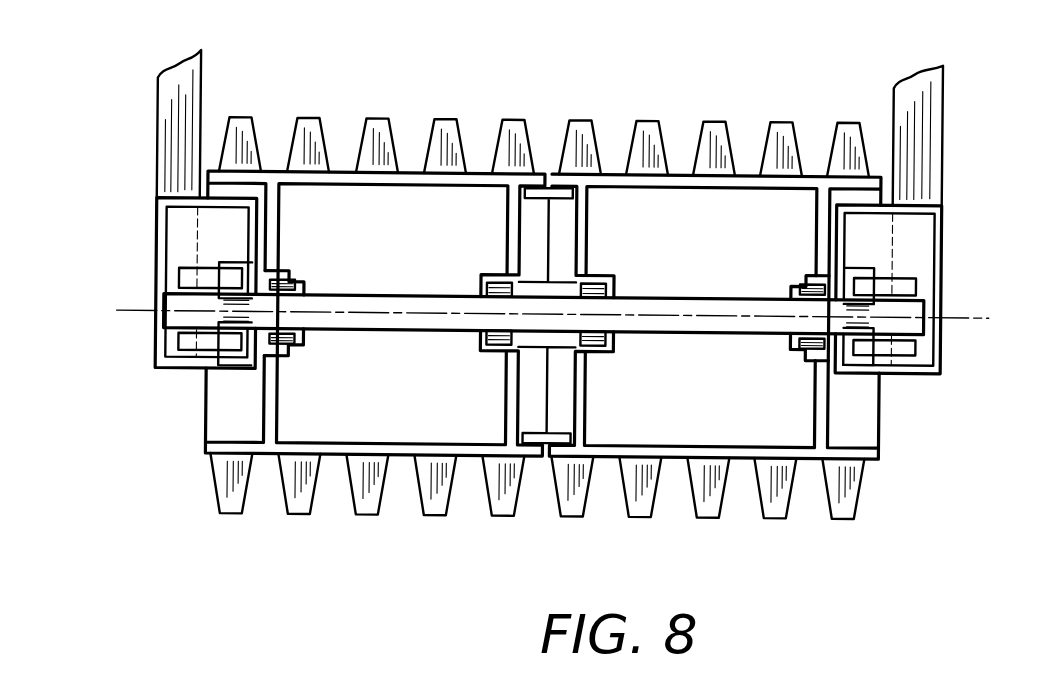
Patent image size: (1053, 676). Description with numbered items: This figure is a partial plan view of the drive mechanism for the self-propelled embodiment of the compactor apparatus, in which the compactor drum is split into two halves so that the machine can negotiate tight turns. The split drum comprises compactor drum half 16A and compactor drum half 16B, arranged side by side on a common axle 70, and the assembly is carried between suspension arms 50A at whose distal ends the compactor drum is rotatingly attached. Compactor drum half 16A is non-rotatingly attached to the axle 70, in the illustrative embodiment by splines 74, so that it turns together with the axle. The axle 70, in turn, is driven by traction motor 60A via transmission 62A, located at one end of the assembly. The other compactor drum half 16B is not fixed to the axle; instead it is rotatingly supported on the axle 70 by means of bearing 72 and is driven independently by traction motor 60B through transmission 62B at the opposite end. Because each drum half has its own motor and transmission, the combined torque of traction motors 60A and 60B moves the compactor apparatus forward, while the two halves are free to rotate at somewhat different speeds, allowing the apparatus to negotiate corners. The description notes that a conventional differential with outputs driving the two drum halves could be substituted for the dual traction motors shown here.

The compactor drum half 16A is at (378, 148).
The compactor drum half 16B is at (713, 143).
The suspension arm 50A is at (190, 77).
The traction motor 60A is at (172, 224).
The traction motor 60B is at (917, 247).
The transmission 62A is at (236, 322).
The transmission 62B is at (870, 336).
The axle 70 is at (372, 329).
The bearing 72 is at (601, 353).
The splines 74 is at (293, 279).